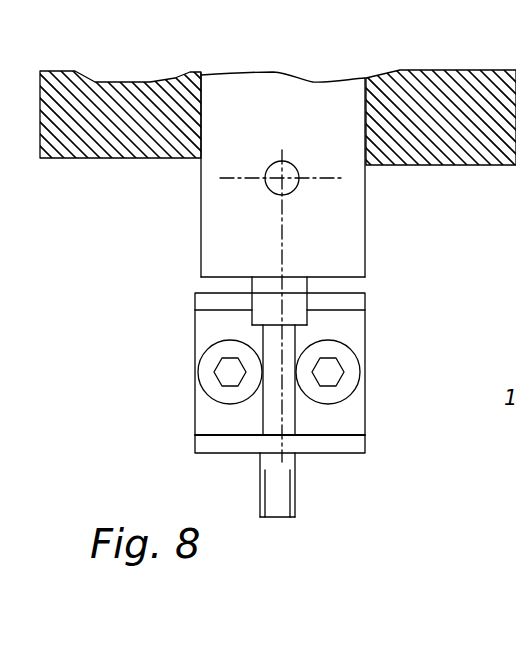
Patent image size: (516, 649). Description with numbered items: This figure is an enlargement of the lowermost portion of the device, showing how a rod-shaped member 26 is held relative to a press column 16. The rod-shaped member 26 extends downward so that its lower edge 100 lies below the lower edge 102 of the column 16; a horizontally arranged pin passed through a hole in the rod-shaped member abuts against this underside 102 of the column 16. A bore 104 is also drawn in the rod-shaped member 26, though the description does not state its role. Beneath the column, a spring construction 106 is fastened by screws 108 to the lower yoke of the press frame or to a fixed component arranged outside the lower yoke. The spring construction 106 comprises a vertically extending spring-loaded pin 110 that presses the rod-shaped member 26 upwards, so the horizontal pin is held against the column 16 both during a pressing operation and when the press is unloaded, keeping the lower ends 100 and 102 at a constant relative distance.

The column 16 is at (258, 129).
The rod-shaped member 26 is at (284, 239).
The lower edge of the rod-shaped member 100 is at (204, 278).
The lower edge of the column 102 is at (131, 159).
The bore 104 is at (297, 187).
The spring construction 106 is at (224, 435).
The screws 108 is at (197, 368).
The spring-loaded pin 110 is at (273, 505).